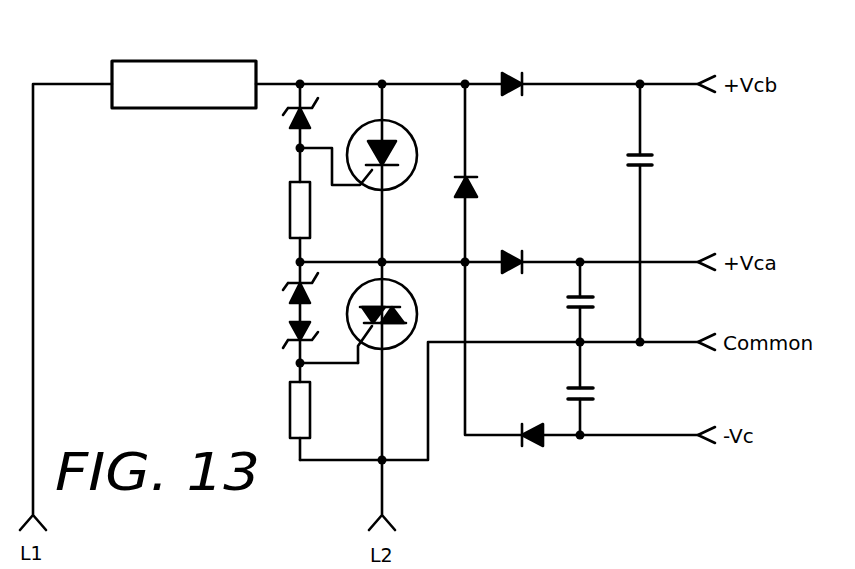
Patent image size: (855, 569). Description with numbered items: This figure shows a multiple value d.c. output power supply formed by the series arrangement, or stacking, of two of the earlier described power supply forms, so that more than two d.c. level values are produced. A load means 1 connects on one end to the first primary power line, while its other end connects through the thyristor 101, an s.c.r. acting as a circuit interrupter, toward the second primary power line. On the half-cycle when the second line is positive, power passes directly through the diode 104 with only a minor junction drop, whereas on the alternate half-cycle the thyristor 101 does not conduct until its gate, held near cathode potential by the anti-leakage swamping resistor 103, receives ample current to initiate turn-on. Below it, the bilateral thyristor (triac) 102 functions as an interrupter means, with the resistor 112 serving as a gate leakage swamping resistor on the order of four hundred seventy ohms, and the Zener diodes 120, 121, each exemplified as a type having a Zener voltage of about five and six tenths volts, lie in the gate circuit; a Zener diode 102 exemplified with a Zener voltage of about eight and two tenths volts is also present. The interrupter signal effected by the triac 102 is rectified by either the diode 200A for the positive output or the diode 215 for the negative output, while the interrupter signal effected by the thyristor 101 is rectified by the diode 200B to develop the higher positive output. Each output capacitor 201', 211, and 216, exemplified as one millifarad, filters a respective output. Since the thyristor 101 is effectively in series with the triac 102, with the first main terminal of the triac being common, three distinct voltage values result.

The load means 1 is at (184, 65).
The thyristor (triac) 102 is at (292, 133).
The thyristor (s.c.r.) 101 is at (402, 148).
The anti-leakage swamping resistor 103 is at (298, 213).
The diode 104 is at (478, 185).
The diode 120 is at (283, 305).
The diode 121 is at (292, 335).
The gate leakage swamping resistor 112 is at (298, 423).
The diode 200B is at (528, 82).
The diode 200A is at (553, 233).
The output capacitor 201' is at (668, 213).
The output capacitor 211 is at (595, 303).
The output capacitor 216 is at (628, 390).
The diode 215 is at (517, 432).